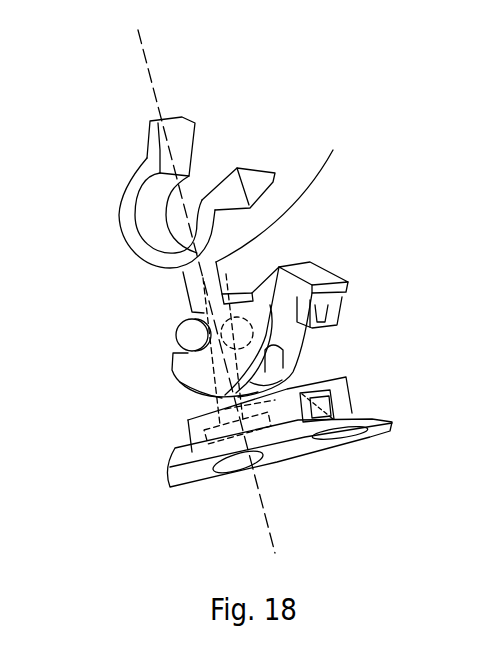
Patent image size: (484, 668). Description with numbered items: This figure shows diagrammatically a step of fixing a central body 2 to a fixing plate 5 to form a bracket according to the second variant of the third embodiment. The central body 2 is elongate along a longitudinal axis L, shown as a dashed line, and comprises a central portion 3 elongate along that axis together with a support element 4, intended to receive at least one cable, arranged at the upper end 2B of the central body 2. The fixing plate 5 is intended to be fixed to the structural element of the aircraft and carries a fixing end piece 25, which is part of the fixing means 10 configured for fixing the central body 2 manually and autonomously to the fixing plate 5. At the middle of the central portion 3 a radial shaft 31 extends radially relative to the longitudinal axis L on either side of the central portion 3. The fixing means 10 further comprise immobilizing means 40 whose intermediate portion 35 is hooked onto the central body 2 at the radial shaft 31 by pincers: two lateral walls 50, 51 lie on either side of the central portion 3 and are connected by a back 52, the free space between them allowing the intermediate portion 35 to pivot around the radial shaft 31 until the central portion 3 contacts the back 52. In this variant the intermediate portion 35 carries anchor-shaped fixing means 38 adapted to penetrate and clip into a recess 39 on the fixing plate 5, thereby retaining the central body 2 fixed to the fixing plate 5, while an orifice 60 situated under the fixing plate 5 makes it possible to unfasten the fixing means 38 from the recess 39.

The longitudinal axis L is at (137, 42).
The upper end 2B is at (125, 180).
The support element 4 is at (258, 170).
The central portion 3 is at (278, 193).
The central body 2 is at (228, 283).
The immobilizing means 40 is at (356, 273).
The fixing means 38 is at (342, 296).
The back 52 is at (296, 334).
The intermediate portion 35 is at (303, 350).
The lateral wall 51 is at (296, 377).
The radial shaft 31 is at (186, 330).
The lateral wall 50 is at (184, 371).
The fixing means 10 is at (199, 380).
The fixing end piece 25 is at (188, 436).
The recess 39 is at (330, 402).
The fixing plate 5 is at (188, 478).
The orifice 60 is at (320, 443).